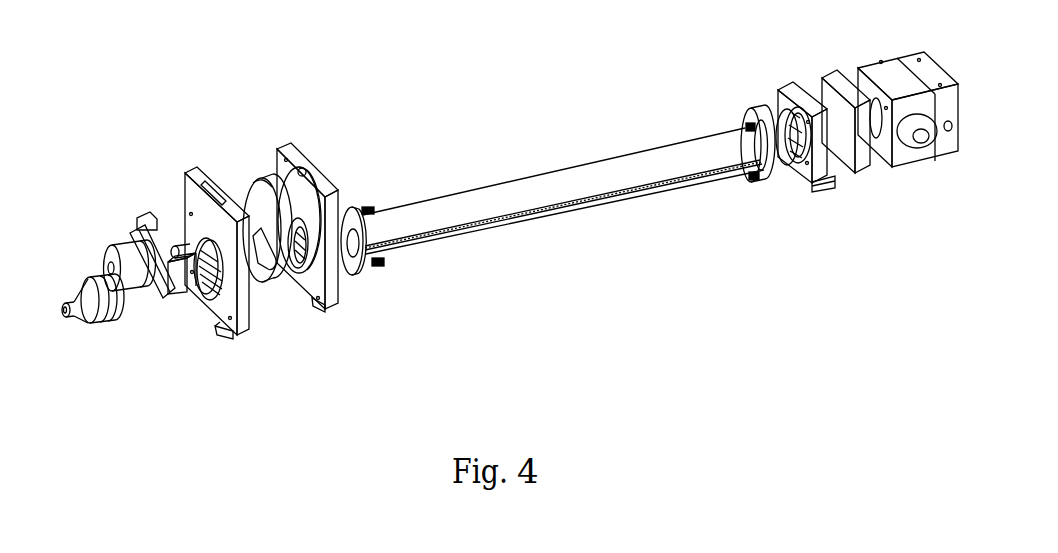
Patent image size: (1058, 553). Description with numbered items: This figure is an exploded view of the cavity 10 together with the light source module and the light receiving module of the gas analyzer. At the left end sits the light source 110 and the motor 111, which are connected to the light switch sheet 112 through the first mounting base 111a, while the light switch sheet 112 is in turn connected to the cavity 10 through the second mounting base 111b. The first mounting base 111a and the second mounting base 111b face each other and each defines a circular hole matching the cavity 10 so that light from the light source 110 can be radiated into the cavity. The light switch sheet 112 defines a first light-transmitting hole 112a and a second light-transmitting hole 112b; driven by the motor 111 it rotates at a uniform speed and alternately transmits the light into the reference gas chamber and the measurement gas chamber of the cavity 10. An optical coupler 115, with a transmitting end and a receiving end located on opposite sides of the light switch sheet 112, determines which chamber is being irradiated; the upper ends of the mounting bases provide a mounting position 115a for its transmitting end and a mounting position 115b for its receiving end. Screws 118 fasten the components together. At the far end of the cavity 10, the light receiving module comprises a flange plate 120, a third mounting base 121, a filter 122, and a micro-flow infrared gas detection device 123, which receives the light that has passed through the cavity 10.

The cavity 10 is at (515, 203).
The light source 110 is at (78, 278).
The motor 111 is at (122, 228).
The first mounting base 111a is at (238, 334).
The second mounting base 111b is at (322, 302).
The light switch sheet 112 is at (240, 212).
The first light-transmitting hole 112a is at (261, 183).
The second light-transmitting hole 112b is at (258, 264).
The optical coupler 115 is at (268, 186).
The mounting position for the transmitting end of the optical coupler 115a is at (205, 180).
The mounting position for the receiving end of the optical coupler 115b is at (307, 172).
The screws 118 is at (752, 182).
The flange plate 120 is at (743, 112).
The third mounting base 121 is at (813, 192).
The filter 122 is at (837, 72).
The micro-flow infrared gas detection device 123 is at (897, 56).